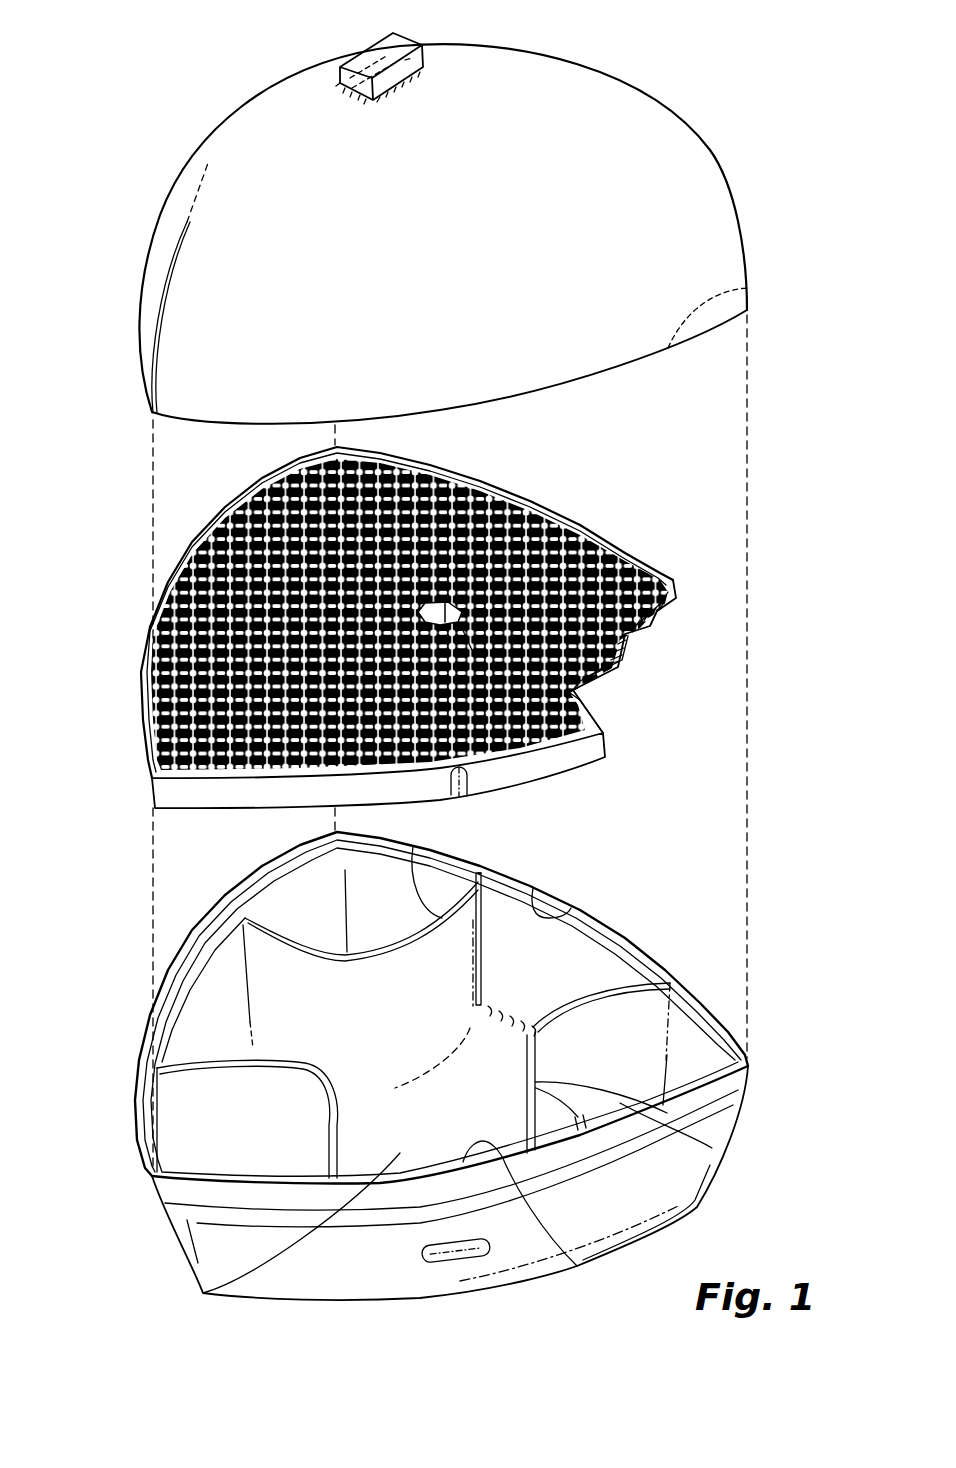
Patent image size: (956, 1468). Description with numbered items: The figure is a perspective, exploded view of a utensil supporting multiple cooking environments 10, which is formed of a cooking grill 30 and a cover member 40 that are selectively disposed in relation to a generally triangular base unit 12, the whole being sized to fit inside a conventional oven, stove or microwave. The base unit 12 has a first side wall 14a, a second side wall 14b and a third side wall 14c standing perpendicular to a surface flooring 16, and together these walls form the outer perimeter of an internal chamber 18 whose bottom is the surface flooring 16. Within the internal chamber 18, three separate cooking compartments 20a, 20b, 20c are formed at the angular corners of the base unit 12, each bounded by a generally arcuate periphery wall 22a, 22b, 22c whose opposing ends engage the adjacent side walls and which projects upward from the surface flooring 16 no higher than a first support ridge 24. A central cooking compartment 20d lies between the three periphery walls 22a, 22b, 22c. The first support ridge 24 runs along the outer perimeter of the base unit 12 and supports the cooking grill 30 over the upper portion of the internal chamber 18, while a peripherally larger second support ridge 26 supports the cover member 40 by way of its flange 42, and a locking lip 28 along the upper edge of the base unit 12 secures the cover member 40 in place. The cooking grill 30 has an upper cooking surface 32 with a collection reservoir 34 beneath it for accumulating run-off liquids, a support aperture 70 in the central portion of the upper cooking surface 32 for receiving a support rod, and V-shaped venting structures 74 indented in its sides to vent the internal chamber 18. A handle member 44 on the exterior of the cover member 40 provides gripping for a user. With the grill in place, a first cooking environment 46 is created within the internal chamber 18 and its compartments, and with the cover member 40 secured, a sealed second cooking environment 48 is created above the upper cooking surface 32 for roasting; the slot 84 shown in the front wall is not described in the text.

The utensil supporting multiple cooking environments 10 is at (801, 765).
The base unit 12 is at (427, 1062).
The first side wall 14a is at (232, 1036).
The second side wall 14b is at (568, 976).
The third side wall 14c is at (384, 1284).
The surface flooring 16 is at (384, 1126).
The internal chamber 18 is at (535, 890).
The first cooking compartment 20a is at (200, 1098).
The second cooking compartment 20b is at (413, 845).
The third cooking compartment 20c is at (710, 1147).
The central cooking compartment 20d is at (210, 1293).
The periphery wall 22a is at (272, 1134).
The periphery wall 22b is at (394, 1034).
The periphery wall 22c is at (624, 1056).
The first support ridge 24 is at (238, 925).
The second support ridge 26 is at (268, 887).
The locking lip 28 is at (297, 852).
The cooking grill 30 is at (474, 623).
The upper cooking surface 32 is at (531, 496).
The collection reservoir 34 is at (657, 623).
The cover member 40 is at (407, 214).
The flange 42 is at (142, 399).
The handle member 44 is at (396, 48).
The first cooking environment 46 is at (556, 1262).
The second cooking environment 48 is at (668, 350).
The support aperture 70 is at (577, 692).
The venting structure 74 is at (460, 782).
The slot 84 is at (460, 1254).